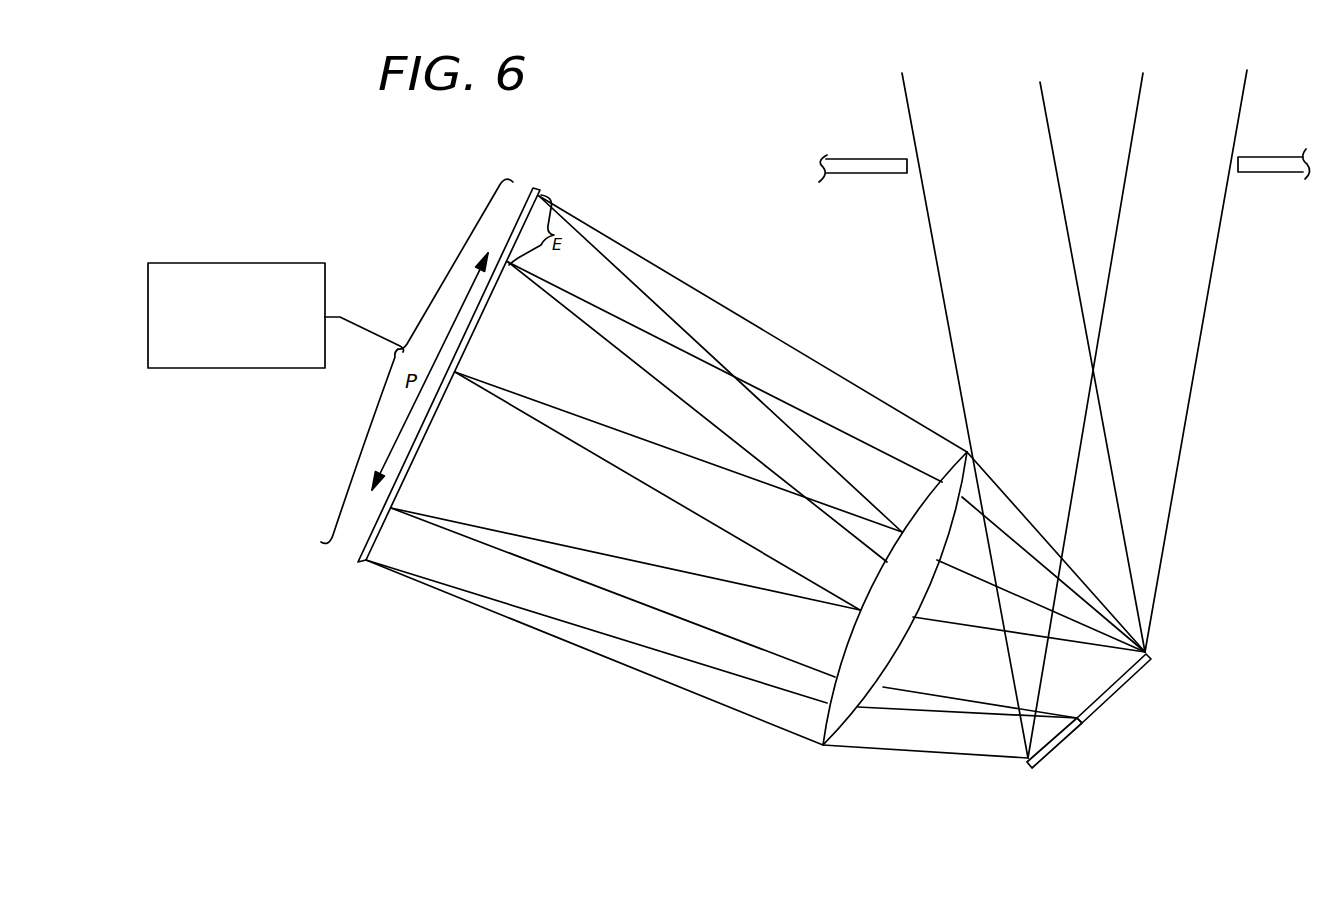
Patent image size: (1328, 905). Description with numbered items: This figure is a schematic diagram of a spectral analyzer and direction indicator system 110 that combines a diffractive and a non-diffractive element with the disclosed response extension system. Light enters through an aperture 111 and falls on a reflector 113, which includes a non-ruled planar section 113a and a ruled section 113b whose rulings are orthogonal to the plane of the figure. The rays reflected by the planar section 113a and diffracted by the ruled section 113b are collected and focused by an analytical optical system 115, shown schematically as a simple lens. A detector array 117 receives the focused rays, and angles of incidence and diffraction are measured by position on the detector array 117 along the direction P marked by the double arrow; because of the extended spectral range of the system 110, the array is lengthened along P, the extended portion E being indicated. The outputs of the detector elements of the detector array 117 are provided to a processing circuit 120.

The spectral analyzer and direction indicator system 110 is at (1205, 396).
The aperture 111 is at (1238, 163).
The reflector 113 is at (1118, 723).
The non-ruled planar section 113a is at (1040, 761).
The ruled section 113b is at (1152, 661).
The analytical optical system 115 is at (823, 748).
The detector array 117 is at (361, 565).
The processing circuit 120 is at (177, 368).